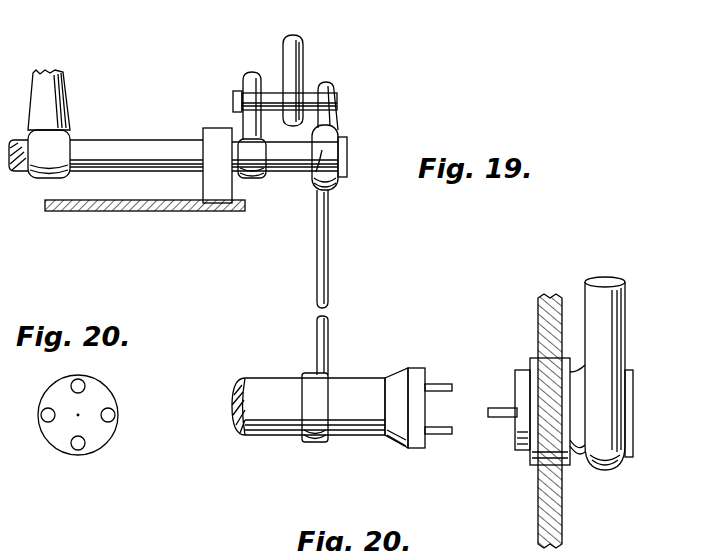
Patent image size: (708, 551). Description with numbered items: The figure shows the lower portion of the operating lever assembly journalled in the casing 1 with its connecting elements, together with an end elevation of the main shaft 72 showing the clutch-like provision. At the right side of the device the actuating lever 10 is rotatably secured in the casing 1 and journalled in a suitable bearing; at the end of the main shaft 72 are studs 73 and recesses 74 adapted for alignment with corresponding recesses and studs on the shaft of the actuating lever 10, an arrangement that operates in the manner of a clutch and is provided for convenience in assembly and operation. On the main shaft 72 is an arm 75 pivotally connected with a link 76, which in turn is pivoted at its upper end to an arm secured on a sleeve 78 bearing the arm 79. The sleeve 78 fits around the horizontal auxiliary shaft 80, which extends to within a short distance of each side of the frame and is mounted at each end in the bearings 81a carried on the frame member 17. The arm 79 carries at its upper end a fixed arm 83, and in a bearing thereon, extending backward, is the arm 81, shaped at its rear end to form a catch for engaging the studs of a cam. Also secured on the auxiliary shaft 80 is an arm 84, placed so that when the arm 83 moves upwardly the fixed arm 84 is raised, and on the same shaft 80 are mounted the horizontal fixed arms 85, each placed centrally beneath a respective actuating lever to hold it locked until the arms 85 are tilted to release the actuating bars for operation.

In FIG. 19, the casing 1 is at (538, 312).
In FIG. 19, the actuating lever 10 is at (612, 313).
In FIG. 19, the frame member 17 is at (184, 212).
In FIG. 19, the main shaft 72 is at (260, 378).
In FIG. 20, the main shaft 72 is at (42, 440).
In FIG. 19, the studs 73 is at (448, 428).
In FIG. 20, the studs 73 is at (85, 385).
In FIG. 20, the recesses 74 is at (44, 416).
In FIG. 19, the arm 75 is at (322, 390).
In FIG. 19, the link 76 is at (328, 318).
In FIG. 19, the sleeve 78 is at (322, 157).
In FIG. 19, the arm 79 is at (337, 126).
In FIG. 19, the auxiliary shaft 80 is at (145, 143).
In FIG. 19, the arm 81 is at (304, 58).
In FIG. 19, the bearings 81a is at (208, 183).
In FIG. 19, the fixed arm 83 is at (233, 100).
In FIG. 19, the arm 84 is at (250, 72).
In FIG. 19, the horizontal fixed arms 85 is at (58, 96).